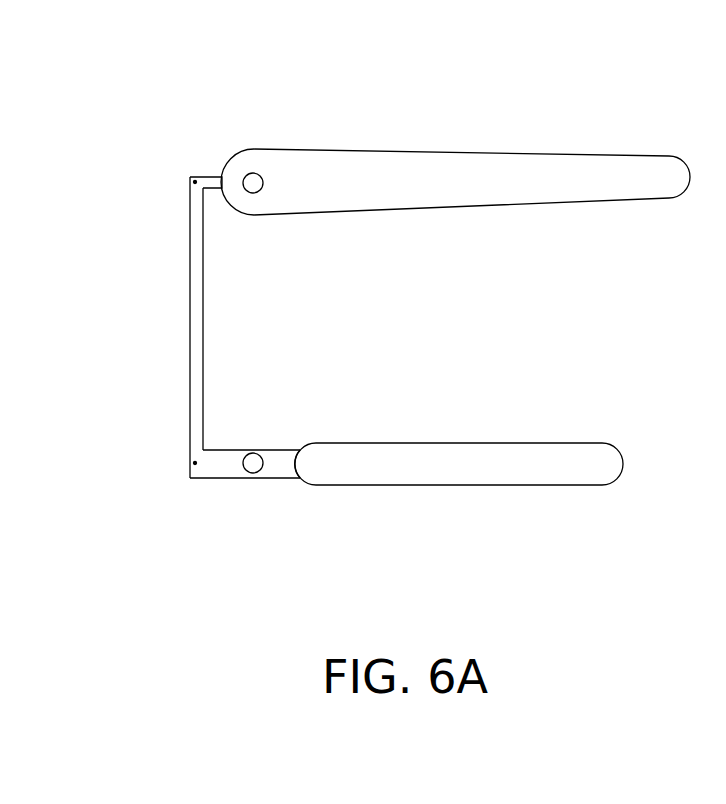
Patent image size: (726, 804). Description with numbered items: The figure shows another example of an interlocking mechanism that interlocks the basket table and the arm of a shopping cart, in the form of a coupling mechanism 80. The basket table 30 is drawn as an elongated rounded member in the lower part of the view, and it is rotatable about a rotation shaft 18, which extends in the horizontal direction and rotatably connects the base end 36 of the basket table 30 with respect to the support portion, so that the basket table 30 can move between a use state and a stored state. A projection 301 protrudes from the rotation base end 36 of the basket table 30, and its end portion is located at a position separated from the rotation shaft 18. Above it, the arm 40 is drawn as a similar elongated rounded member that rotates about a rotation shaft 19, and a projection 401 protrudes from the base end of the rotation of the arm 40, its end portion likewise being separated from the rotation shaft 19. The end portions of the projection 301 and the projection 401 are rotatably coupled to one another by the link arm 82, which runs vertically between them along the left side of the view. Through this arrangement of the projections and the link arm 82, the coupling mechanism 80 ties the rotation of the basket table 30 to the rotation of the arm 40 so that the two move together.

The arm 40 is at (530, 153).
The rotation shaft 19 is at (257, 178).
The projection 401 is at (210, 182).
The coupling mechanism 80 is at (190, 318).
The link arm 82 is at (190, 403).
The projection 301 is at (222, 467).
The rotation shaft 18 is at (257, 458).
The basket table 30 is at (532, 443).
The base end 36 is at (297, 478).